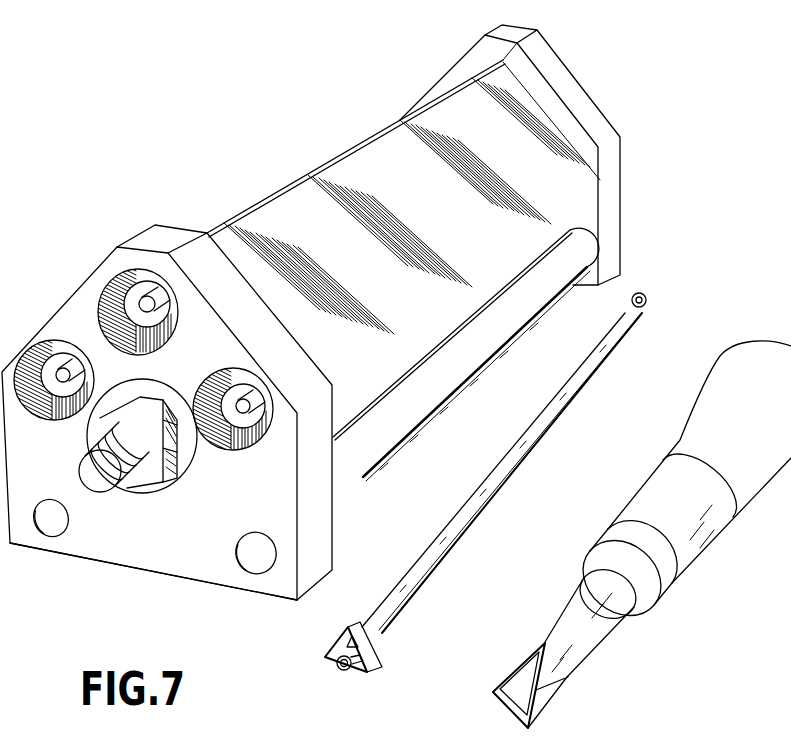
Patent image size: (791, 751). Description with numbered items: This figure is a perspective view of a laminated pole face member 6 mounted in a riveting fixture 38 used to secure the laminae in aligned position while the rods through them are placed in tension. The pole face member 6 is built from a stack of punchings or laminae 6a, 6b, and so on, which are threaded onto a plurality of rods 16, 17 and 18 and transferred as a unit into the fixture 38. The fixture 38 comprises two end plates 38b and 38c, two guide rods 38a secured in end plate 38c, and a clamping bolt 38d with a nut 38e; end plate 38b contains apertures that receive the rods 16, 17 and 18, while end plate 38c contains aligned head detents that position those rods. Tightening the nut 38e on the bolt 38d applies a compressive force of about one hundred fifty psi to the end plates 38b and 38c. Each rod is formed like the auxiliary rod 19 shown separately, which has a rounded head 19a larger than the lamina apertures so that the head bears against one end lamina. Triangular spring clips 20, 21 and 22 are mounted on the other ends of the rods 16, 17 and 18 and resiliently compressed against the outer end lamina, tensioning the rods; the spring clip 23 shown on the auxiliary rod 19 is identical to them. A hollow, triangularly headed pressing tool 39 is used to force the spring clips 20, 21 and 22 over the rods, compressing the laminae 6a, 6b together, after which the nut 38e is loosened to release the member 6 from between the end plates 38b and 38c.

The pole face member 6 is at (403, 188).
The lamina (punching) 6a is at (315, 172).
The lamina (punching) 6b is at (397, 123).
The rod 16 is at (78, 372).
The rod 17 is at (162, 293).
The rod 18 is at (253, 382).
The auxiliary rod 19 is at (510, 473).
The head 19a is at (646, 296).
The triangular spring clip 20 is at (83, 377).
The triangular spring clip 21 is at (173, 305).
The triangular spring clip 22 is at (247, 373).
The spring clip 23 is at (380, 660).
The riveting fixture 38 is at (154, 210).
The guide rod 38a is at (523, 340).
The end plate 38b is at (163, 567).
The end plate 38c is at (567, 70).
The clamping bolt 38d is at (88, 433).
The nut 38e is at (107, 487).
The pressing tool 39 is at (710, 560).